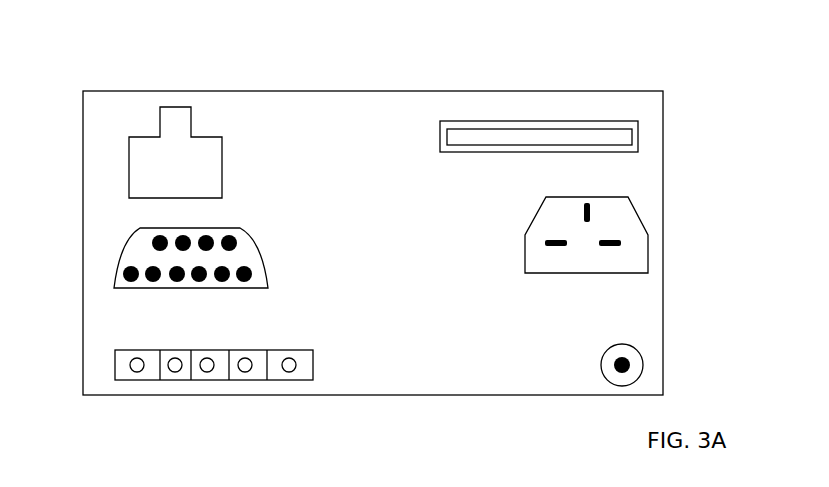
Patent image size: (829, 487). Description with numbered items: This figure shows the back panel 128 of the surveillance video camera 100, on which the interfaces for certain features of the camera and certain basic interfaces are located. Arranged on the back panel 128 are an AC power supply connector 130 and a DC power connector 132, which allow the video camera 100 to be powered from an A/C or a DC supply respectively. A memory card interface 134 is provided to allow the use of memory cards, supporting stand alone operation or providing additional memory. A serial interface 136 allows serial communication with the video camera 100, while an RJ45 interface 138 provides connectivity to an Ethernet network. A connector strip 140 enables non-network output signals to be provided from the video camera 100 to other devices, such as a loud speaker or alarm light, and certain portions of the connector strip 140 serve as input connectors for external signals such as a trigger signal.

The video camera 100 is at (282, 91).
The back panel 128 is at (373, 60).
The AC power supply connector 130 is at (632, 212).
The DC power connector 132 is at (632, 350).
The memory card interface 134 is at (587, 121).
The serial interface 136 is at (146, 228).
The RJ45 interface 138 is at (146, 137).
The connector strip 140 is at (130, 350).